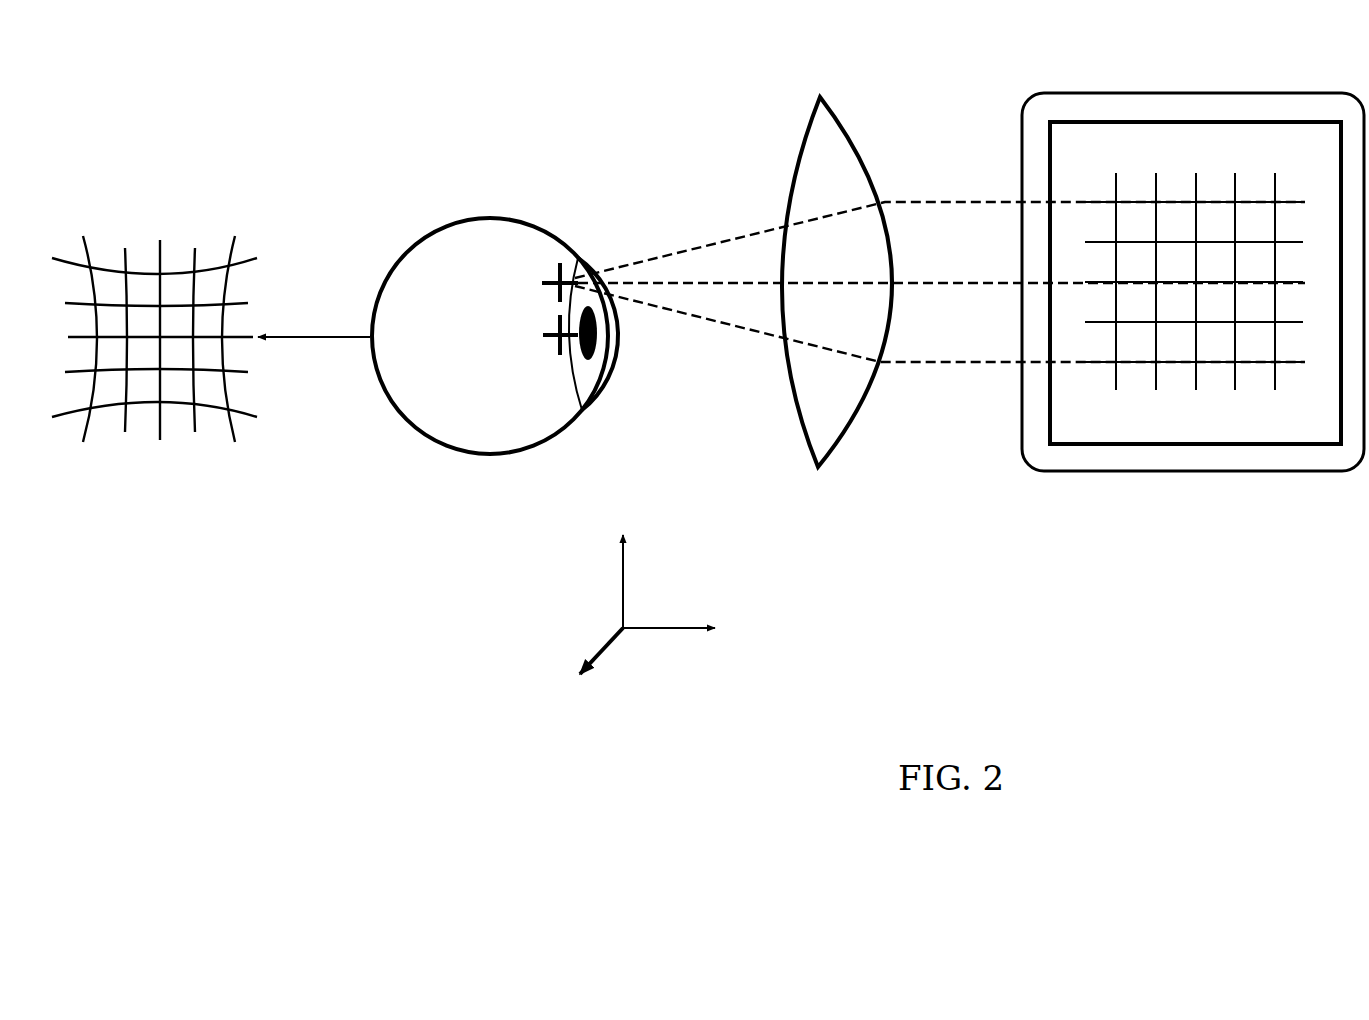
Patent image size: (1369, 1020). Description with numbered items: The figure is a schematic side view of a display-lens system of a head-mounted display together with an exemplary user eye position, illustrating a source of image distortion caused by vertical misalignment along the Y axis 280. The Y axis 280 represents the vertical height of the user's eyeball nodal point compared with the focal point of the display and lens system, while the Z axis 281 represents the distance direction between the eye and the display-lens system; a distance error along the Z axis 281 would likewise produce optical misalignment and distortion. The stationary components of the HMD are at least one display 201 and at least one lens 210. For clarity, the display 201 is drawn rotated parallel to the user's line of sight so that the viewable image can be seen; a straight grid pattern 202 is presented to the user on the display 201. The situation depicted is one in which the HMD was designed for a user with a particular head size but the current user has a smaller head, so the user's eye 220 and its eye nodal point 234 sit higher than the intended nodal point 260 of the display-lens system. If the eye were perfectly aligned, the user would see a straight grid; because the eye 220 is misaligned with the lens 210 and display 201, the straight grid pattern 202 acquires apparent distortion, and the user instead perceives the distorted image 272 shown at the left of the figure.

The display 201 is at (1022, 128).
The grid pattern 202 is at (1114, 168).
The lens 210 is at (805, 125).
The eye 220 is at (432, 232).
The eye nodal point 234 is at (553, 341).
The display-lens nodal point 260 is at (566, 273).
The distorted image 272 is at (164, 242).
The Y axis 280 is at (588, 587).
The Z axis 281 is at (663, 668).